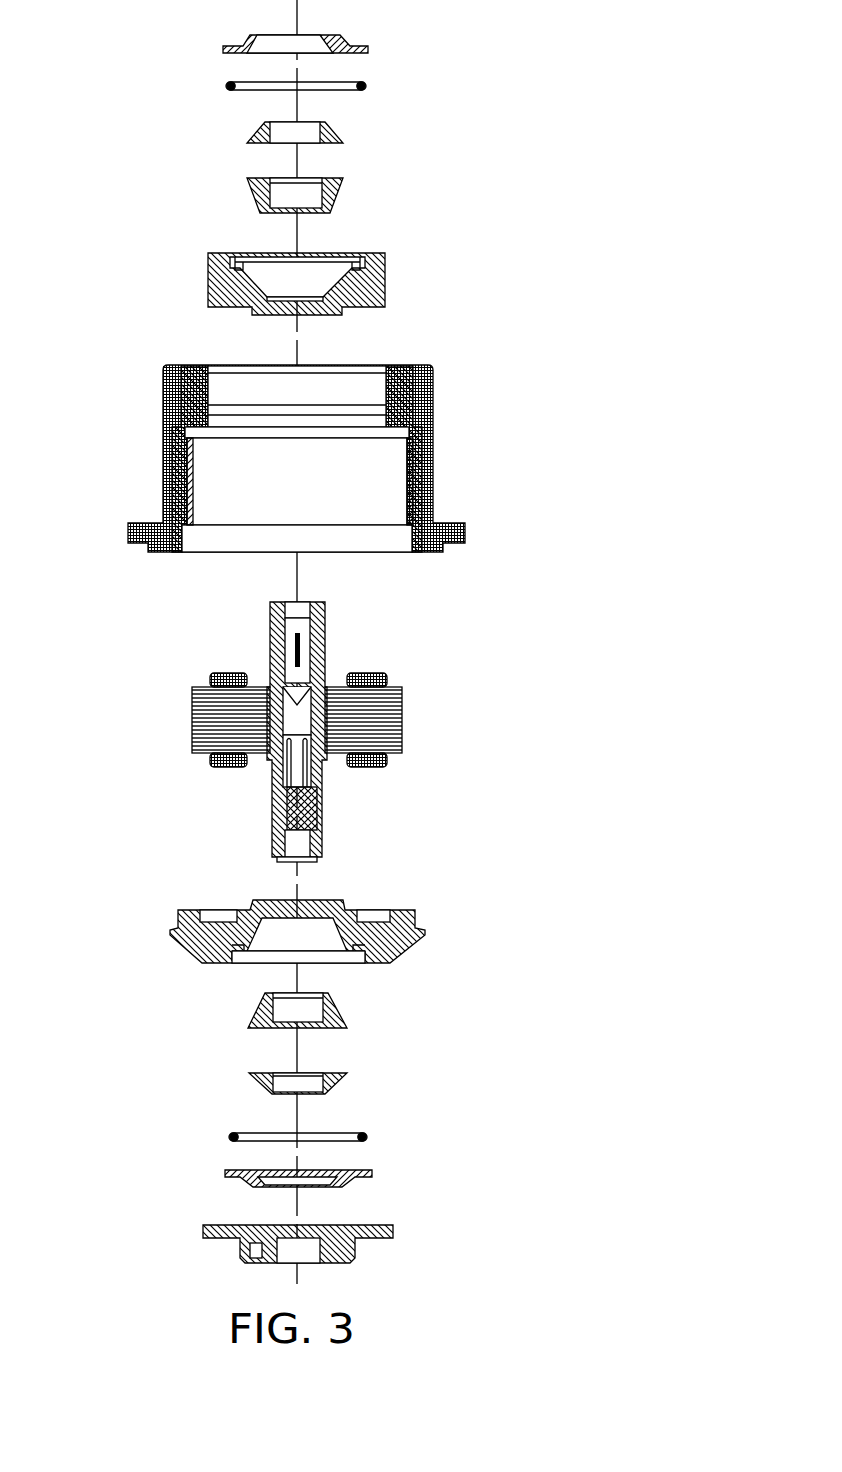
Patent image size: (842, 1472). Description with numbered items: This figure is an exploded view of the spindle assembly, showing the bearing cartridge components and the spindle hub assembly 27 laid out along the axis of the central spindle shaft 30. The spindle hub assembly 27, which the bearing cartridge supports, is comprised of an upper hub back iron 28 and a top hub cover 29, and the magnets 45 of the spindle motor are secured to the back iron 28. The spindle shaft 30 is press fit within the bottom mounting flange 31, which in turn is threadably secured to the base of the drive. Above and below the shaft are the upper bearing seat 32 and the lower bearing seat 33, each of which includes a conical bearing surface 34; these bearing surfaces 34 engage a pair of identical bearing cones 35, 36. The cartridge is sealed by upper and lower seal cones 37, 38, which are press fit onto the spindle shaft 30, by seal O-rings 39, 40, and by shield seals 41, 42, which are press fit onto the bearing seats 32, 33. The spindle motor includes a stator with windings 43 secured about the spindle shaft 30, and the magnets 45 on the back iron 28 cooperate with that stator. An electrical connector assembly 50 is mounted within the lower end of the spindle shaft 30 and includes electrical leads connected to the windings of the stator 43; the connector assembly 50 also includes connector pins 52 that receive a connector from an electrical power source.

The spindle hub assembly 27 is at (284, 458).
The upper hub back iron 28 is at (175, 412).
The top hub cover 29 is at (163, 472).
The central spindle shaft 30 is at (378, 745).
The bottom mounting flange 31 is at (371, 1251).
The upper bearing seat 32 is at (395, 272).
The lower bearing seat 33 is at (426, 950).
The conical bearing surfaces 34 is at (263, 262).
The bearing cone 35 is at (354, 192).
The bearing cone 36 is at (356, 1015).
The upper seal cone 37 is at (351, 133).
The lower seal cone 38 is at (353, 1086).
The seal O-ring 39 is at (377, 84).
The seal O-ring 40 is at (386, 1137).
The shield seal 41 is at (361, 37).
The shield seal 42 is at (361, 1182).
The stator with windings 43 is at (418, 710).
The magnets 45 is at (433, 493).
The electrical connector assembly 50 is at (334, 812).
The connector pins 52 is at (312, 860).